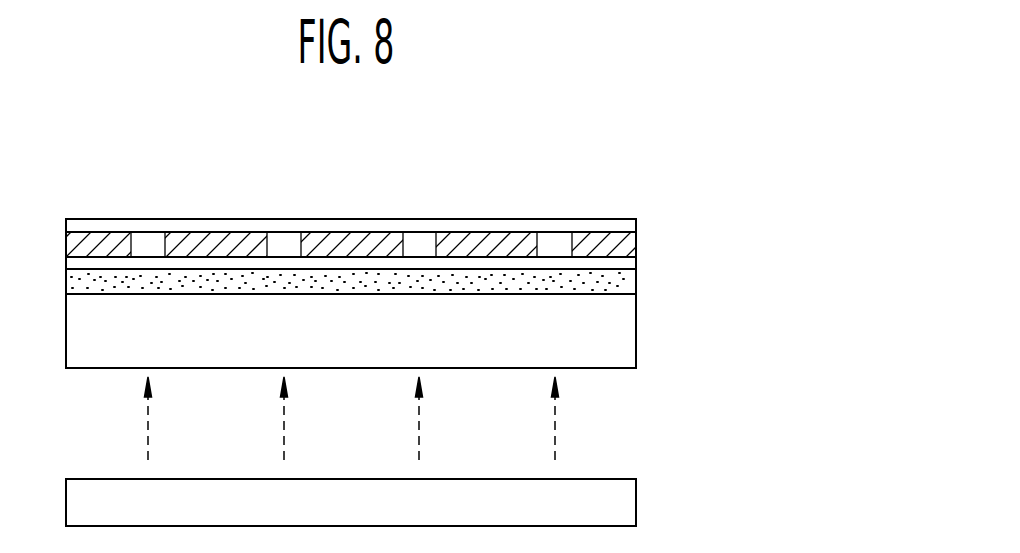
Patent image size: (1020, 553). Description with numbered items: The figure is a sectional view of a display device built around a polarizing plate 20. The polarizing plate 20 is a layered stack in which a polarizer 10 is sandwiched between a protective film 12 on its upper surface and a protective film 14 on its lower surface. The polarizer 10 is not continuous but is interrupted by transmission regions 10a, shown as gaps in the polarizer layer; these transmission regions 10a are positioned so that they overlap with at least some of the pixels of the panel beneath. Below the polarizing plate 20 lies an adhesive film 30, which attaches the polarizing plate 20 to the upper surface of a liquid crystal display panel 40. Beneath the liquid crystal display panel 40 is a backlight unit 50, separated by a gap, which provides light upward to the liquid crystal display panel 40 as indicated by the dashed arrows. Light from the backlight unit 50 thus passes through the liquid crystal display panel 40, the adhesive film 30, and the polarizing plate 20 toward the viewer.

The polarizing plate 20 is at (392, 213).
The protective film 12 is at (634, 221).
The polarizer 10 is at (634, 246).
The transmission region 10a is at (157, 240).
The protective film 14 is at (381, 270).
The adhesive film 30 is at (634, 284).
The liquid crystal display panel 40 is at (630, 333).
The backlight unit 50 is at (630, 500).